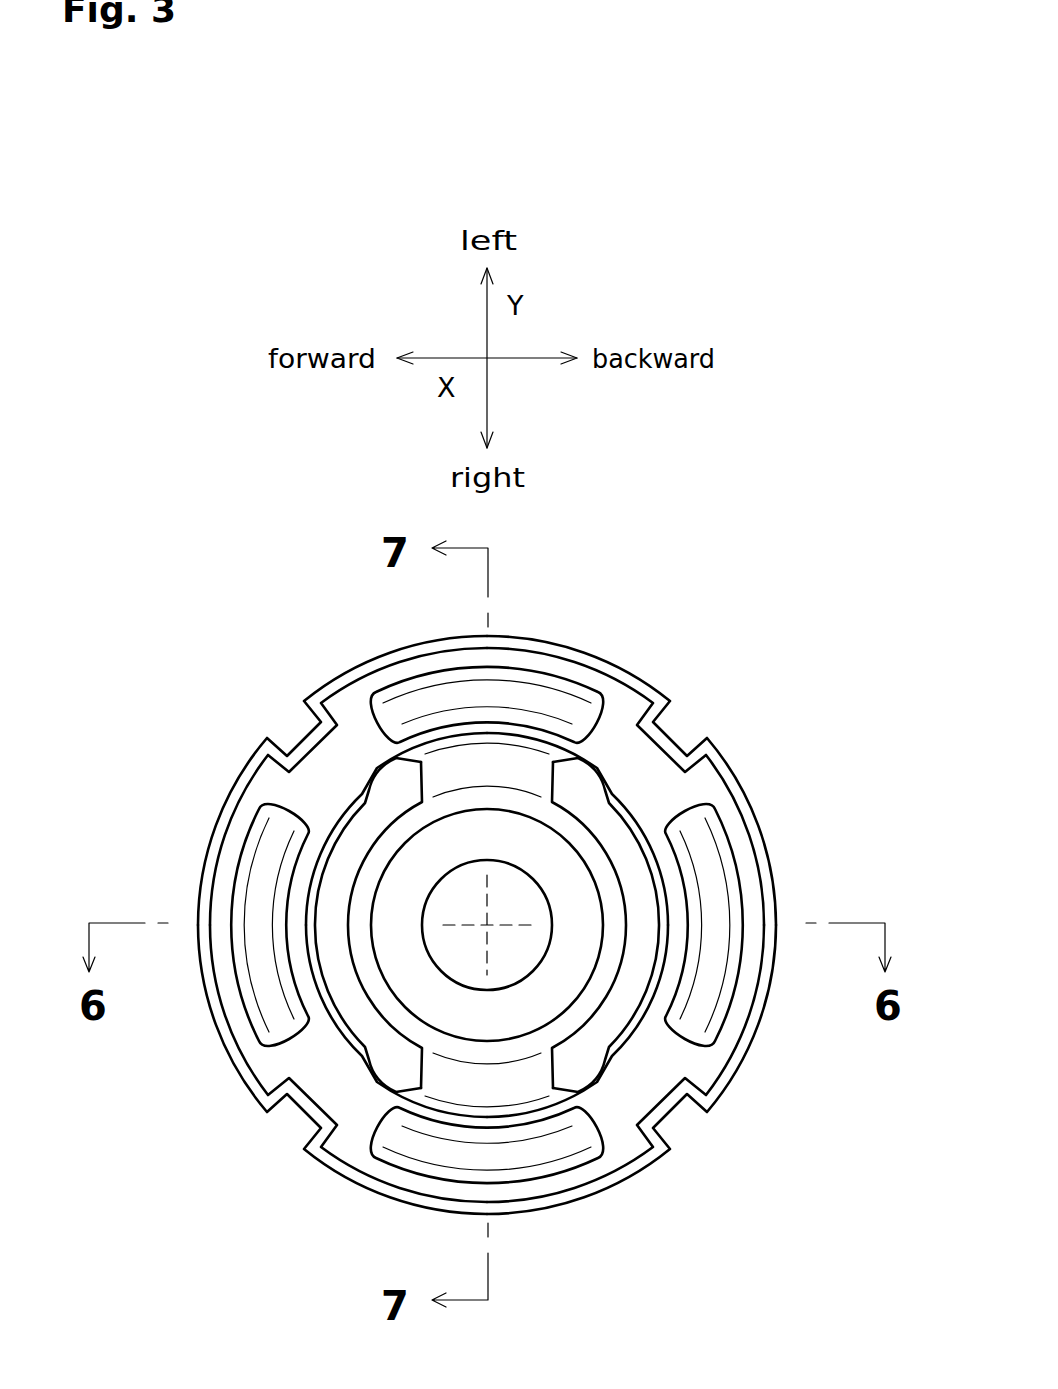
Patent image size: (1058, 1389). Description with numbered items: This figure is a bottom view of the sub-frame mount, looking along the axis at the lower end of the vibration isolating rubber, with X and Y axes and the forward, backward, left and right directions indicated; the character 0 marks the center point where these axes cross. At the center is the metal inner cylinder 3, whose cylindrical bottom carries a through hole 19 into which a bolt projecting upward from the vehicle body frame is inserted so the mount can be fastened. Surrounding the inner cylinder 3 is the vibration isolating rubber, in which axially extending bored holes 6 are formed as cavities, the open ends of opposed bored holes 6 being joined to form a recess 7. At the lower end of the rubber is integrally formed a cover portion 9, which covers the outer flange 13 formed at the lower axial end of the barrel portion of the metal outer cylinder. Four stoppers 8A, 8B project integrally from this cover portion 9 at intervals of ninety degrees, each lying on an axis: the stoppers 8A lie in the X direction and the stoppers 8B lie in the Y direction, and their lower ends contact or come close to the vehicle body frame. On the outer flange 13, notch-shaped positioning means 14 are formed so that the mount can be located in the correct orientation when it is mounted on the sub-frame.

The inner cylinder 3 is at (410, 860).
The bored hole 6 is at (625, 857).
The recess 7 is at (450, 772).
The stopper 8A is at (262, 876).
The stopper 8B is at (530, 692).
The cover portion 9 is at (632, 765).
The outer flange 13 is at (694, 724).
The positioning means 14 is at (292, 723).
The through hole 19 is at (447, 953).
The center axis 0 is at (488, 924).